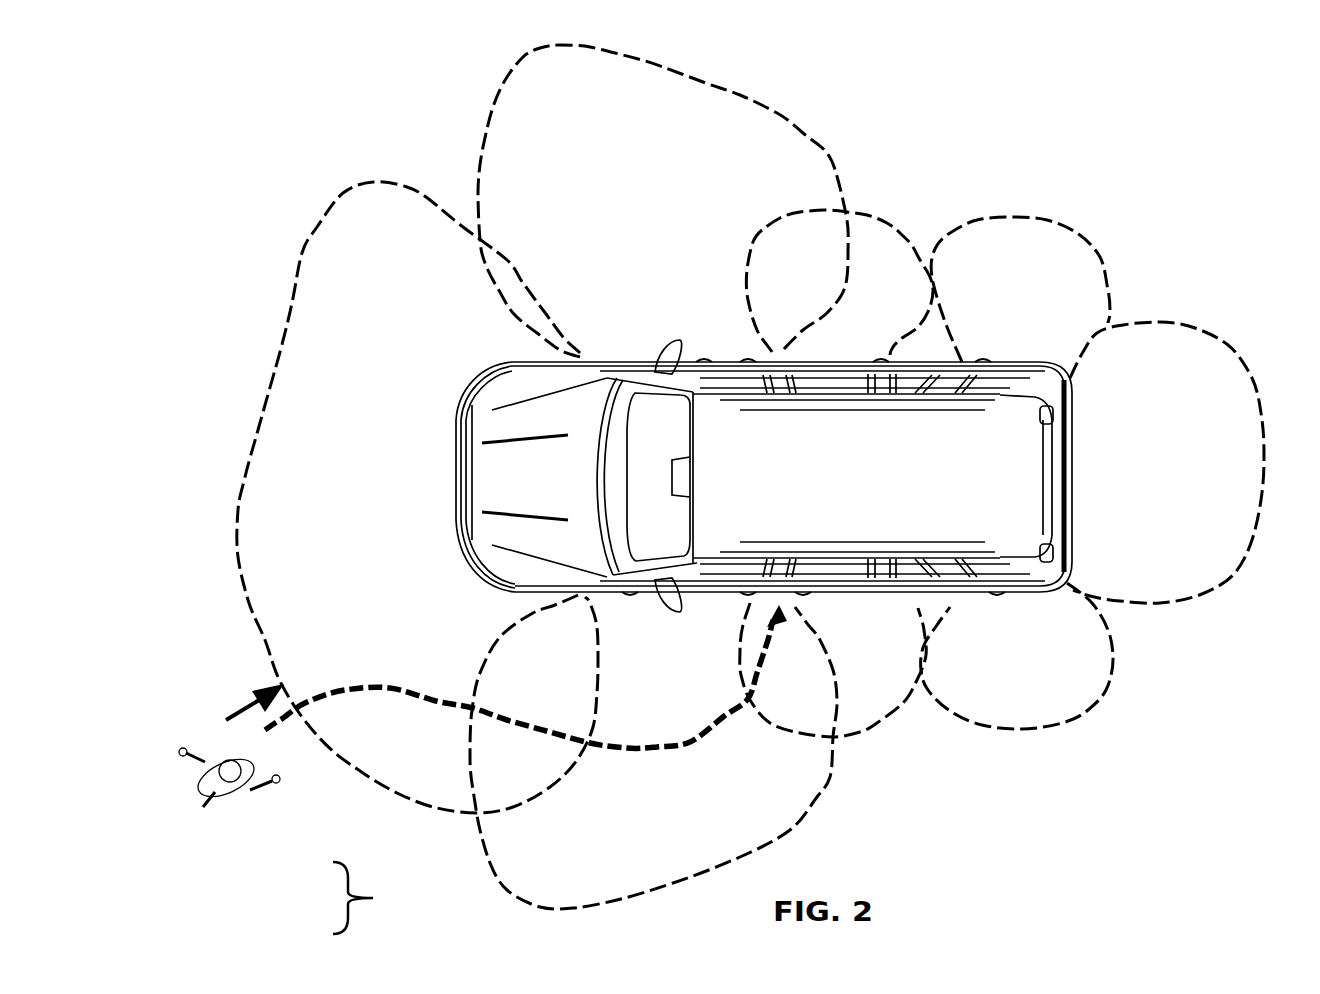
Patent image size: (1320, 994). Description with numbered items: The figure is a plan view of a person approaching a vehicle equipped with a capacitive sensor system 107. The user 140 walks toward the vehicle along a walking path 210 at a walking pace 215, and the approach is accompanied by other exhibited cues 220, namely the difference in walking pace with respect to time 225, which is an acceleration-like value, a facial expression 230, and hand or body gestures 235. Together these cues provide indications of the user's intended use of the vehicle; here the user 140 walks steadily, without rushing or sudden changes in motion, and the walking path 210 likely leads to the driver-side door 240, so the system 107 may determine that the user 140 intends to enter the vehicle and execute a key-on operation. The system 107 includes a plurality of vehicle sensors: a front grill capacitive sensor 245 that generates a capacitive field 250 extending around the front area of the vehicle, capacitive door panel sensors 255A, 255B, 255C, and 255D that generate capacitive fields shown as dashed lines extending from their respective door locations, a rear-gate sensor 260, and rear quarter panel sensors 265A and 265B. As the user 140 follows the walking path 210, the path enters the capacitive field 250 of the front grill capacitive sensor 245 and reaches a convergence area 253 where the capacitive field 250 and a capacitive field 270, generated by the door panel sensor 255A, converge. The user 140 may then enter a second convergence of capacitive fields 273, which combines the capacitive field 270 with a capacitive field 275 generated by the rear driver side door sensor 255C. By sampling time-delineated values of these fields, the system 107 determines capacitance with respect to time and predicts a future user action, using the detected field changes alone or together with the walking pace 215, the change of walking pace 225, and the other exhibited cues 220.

The capacitive sensor system 107 is at (297, 85).
The user 140 is at (260, 803).
The walking path 210 is at (357, 687).
The walking pace 215 is at (236, 704).
The exhibited cues 220 is at (376, 898).
The difference in walking pace with respect to time 225 is at (256, 878).
The facial expression 230 is at (256, 900).
The hand or body gestures 235 is at (256, 922).
The driver-side door 240 is at (748, 597).
The front grill capacitive sensor 245 is at (465, 410).
The capacitive field 250 is at (302, 257).
The convergence area 253 is at (525, 693).
The capacitive door panel sensor 255A is at (630, 598).
The capacitive door panel sensor 255B is at (703, 357).
The rear driver side door sensor 255C is at (803, 597).
The capacitive door panel sensor 255D is at (871, 358).
The rear-gate sensor 260 is at (1073, 520).
The rear quarter panel sensor 265A is at (983, 355).
The rear quarter panel sensor 265B is at (997, 597).
The capacitive field 270 is at (818, 793).
The second convergence of capacitive fields 273 is at (811, 700).
The capacitive field 275 is at (877, 723).